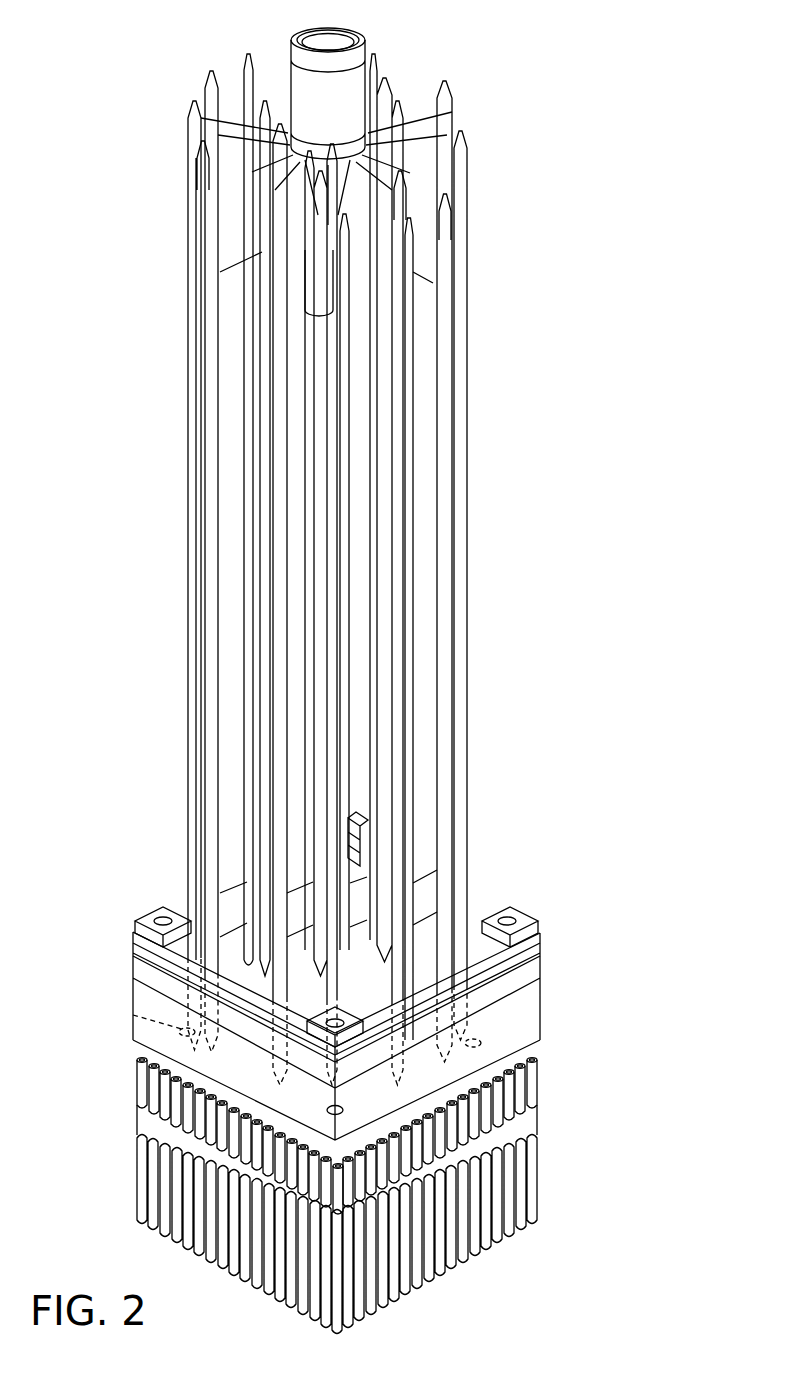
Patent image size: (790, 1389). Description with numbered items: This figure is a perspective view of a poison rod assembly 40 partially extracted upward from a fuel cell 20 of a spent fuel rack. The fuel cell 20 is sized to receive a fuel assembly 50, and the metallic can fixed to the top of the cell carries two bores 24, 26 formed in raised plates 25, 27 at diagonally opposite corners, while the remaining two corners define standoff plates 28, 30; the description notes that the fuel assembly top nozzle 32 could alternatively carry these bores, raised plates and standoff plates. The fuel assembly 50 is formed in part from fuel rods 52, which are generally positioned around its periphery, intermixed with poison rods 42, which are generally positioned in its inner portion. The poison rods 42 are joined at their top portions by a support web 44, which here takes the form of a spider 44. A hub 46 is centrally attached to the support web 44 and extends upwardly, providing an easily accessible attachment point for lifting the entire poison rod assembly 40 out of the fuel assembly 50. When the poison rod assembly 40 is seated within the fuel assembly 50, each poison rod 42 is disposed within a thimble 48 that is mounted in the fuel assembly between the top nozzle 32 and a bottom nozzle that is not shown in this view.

The fuel cell 20 is at (572, 1143).
The bore 24 is at (158, 914).
The raised plate 25 is at (133, 953).
The bore 26 is at (512, 912).
The raised plate 27 is at (543, 950).
The standoff plate 28 is at (360, 816).
The standoff plate 30 is at (320, 1032).
The top nozzle 32 is at (530, 1005).
The poison rod assembly 40 is at (155, 316).
The poison rod 42 is at (468, 520).
The support web 44 is at (470, 172).
The hub 46 is at (370, 36).
The thimble 48 is at (133, 1014).
The fuel assembly 50 is at (525, 1123).
The fuel rod 52 is at (492, 1250).